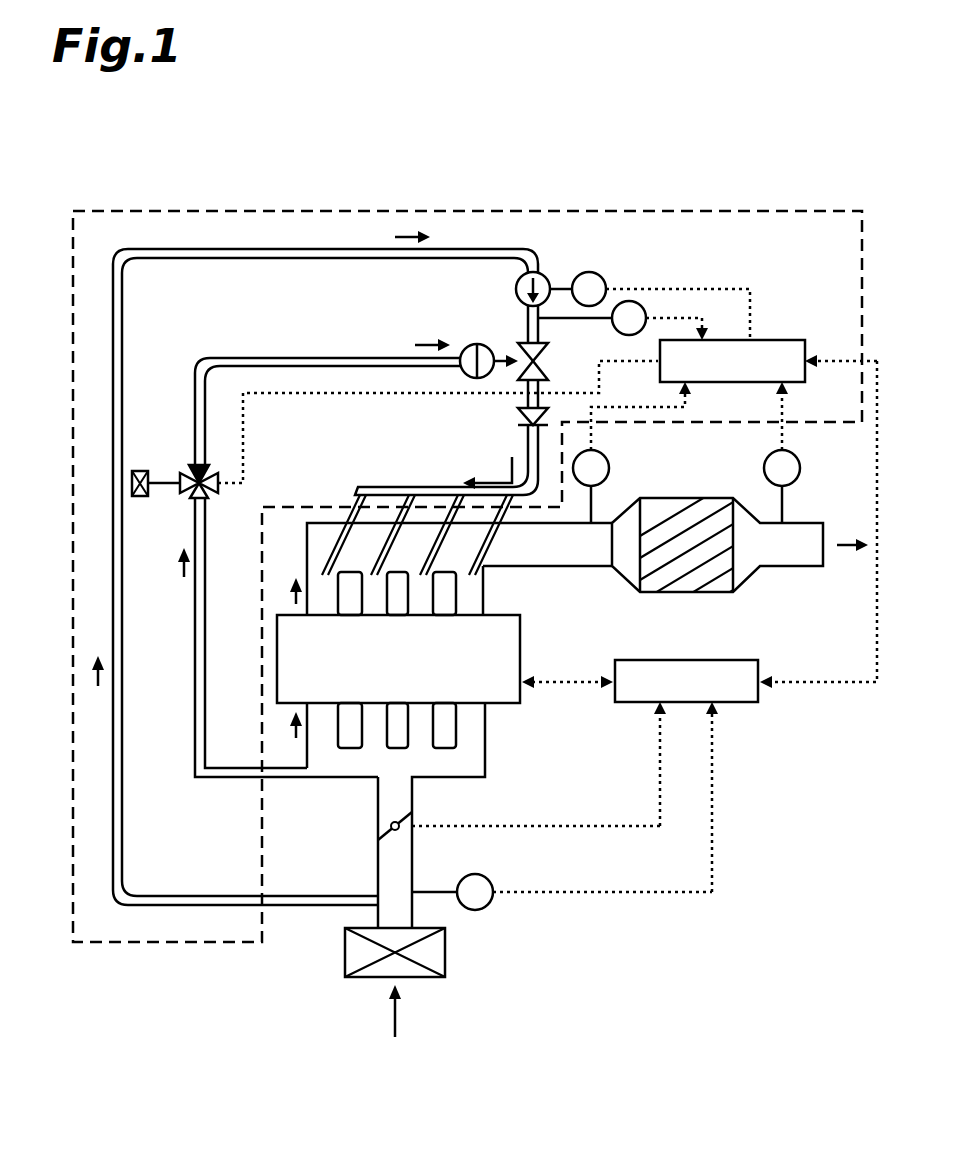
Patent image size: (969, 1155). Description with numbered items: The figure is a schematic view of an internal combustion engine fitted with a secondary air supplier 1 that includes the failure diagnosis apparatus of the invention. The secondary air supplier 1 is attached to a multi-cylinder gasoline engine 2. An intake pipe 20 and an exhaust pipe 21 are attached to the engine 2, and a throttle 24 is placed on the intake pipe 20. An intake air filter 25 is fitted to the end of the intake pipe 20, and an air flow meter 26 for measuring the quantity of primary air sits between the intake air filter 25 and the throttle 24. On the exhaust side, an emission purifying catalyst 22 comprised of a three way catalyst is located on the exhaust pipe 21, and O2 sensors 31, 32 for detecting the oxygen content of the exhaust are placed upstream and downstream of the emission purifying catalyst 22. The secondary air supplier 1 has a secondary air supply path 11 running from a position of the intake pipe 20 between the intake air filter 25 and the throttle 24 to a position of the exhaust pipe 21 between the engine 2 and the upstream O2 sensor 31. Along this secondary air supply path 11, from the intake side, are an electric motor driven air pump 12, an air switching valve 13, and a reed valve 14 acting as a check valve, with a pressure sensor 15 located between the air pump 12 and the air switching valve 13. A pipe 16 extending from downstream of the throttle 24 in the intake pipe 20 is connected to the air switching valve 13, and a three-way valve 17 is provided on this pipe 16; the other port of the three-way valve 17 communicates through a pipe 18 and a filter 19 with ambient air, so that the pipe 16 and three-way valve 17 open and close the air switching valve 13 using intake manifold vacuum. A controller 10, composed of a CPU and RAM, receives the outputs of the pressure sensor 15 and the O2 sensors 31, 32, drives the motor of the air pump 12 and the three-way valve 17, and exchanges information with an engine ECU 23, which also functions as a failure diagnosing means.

The secondary air supplier 1 is at (132, 943).
The engine 2 is at (520, 640).
The controller 10 is at (775, 340).
The secondary air supply path 11 is at (305, 248).
The air pump 12 is at (549, 276).
The air switching valve 13 is at (518, 352).
The reed valve 14 is at (520, 422).
The pressure sensor 15 is at (641, 305).
The pipe 16 is at (320, 358).
The three-way valve 17 is at (194, 468).
The pipe 18 is at (160, 485).
The filter 19 is at (140, 470).
The intake pipe 20 is at (487, 735).
The exhaust pipe 21 is at (563, 567).
The emission purifying catalyst 22 is at (689, 593).
The engine ECU 23 is at (745, 703).
The throttle 24 is at (398, 835).
The intake air filter 25 is at (447, 966).
The air flow meter 26 is at (479, 910).
The upstream O2 sensor 31 is at (611, 468).
The downstream O2 sensor 32 is at (801, 468).